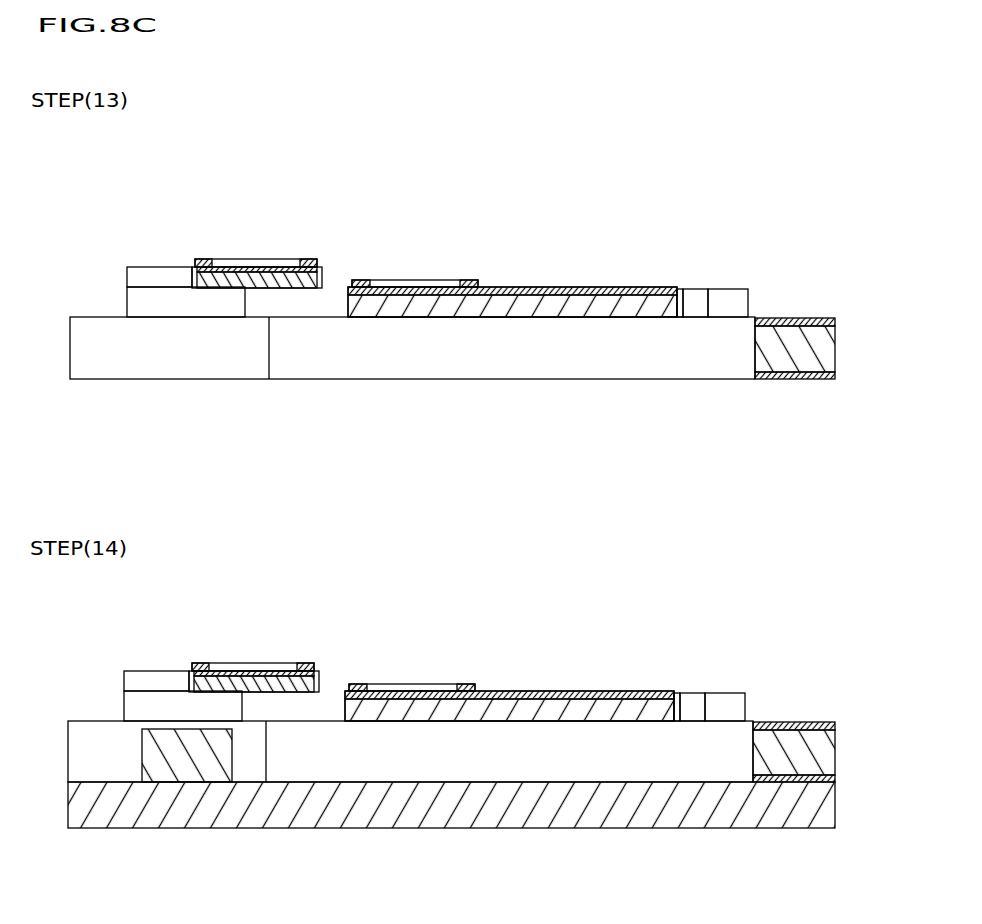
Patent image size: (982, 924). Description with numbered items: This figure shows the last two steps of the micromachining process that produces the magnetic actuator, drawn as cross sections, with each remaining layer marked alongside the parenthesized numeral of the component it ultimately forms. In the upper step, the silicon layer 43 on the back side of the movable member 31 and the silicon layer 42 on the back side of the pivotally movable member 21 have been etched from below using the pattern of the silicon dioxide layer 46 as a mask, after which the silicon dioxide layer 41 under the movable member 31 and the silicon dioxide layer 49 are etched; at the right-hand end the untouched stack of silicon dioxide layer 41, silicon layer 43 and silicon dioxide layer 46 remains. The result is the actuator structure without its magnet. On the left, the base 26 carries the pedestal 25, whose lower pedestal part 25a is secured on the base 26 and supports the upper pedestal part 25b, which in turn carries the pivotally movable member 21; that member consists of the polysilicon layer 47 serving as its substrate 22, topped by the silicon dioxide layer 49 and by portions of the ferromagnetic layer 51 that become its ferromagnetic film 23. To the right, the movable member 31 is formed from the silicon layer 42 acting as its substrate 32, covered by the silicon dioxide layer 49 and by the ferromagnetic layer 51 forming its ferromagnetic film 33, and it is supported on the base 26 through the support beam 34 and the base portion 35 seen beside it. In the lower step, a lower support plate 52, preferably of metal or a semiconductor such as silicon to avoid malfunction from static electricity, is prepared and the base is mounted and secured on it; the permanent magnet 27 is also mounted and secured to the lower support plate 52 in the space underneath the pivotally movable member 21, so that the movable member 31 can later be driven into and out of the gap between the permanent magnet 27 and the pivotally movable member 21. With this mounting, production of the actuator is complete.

The pivotally movable member 21 is at (320, 176).
The substrate 22 is at (323, 214).
The ferromagnetic film 23 is at (210, 262).
The pedestal 25 is at (175, 203).
The lower pedestal part 25a is at (128, 305).
The upper pedestal part 25b is at (155, 275).
The base 26 is at (127, 358).
The permanent magnet 27 is at (142, 757).
The movable member 31 is at (565, 181).
The substrate 32 is at (573, 221).
The ferromagnetic film 33 is at (468, 281).
The support beam 34 is at (695, 303).
The base portion 35 is at (733, 302).
The silicon dioxide layer 41 is at (835, 323).
The silicon layer 42 is at (525, 300).
The silicon layer 43 is at (830, 352).
The silicon dioxide layer 46 is at (836, 380).
The polysilicon layer 47 is at (268, 283).
The silicon dioxide layer 49 is at (292, 268).
The ferromagnetic layer 51 is at (314, 261).
The lower support plate 52 is at (495, 820).